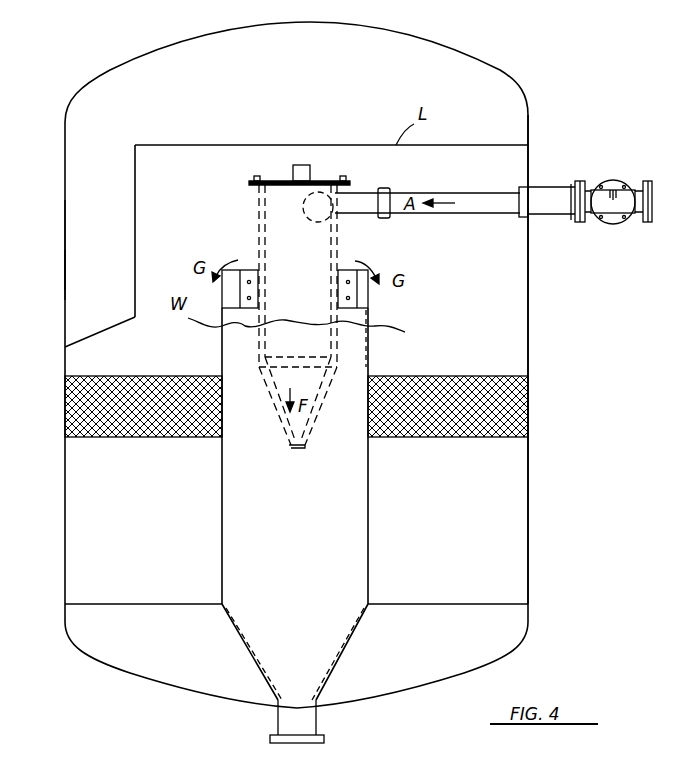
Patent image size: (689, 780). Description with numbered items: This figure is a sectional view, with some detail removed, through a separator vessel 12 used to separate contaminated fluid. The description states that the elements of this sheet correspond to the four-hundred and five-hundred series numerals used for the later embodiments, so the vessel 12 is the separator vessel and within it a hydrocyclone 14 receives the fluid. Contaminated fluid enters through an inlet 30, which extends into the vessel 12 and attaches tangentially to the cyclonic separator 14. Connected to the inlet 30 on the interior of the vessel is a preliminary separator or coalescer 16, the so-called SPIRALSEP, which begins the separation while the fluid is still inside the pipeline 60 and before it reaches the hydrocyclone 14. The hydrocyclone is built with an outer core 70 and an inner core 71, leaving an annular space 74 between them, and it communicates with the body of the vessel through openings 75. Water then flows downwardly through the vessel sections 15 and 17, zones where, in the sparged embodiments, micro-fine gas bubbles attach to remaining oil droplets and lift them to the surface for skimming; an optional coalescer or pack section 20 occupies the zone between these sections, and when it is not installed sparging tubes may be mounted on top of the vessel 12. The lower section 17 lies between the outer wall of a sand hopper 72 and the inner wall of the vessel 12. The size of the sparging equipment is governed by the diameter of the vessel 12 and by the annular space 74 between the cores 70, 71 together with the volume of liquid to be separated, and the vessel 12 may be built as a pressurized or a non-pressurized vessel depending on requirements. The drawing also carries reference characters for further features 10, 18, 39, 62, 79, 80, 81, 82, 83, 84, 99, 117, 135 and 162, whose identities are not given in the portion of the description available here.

The vessel 10 is at (512, 60).
The separator vessel 12 is at (530, 322).
The hydrocyclone 14 is at (208, 214).
The vessel section 15 is at (296, 384).
The preliminary separator or coalescer 16 is at (560, 164).
The vessel section 17 is at (314, 494).
The gas space 18 is at (96, 142).
The coalescer or pack section 20 is at (124, 372).
The inlet 30 is at (572, 223).
The bottom outlet 39 is at (325, 743).
The pipeline 60 is at (434, 192).
The valve 62 is at (622, 178).
The outer core 70 is at (340, 254).
The inner core 71 is at (266, 236).
The sand hopper 72 is at (380, 550).
The annular space 74 is at (256, 180).
The openings 75 is at (297, 450).
The vent fitting 79 is at (311, 173).
The baffle 80 is at (136, 242).
The inclined baffle portion 81 is at (86, 343).
The vessel wall 82 is at (65, 272).
The passage 83 is at (66, 242).
The horizontal partition 84 is at (137, 146).
The support bracket 99 is at (400, 338).
The floor plate 117 is at (95, 604).
The funnel 135 is at (343, 652).
The conical bottom 162 is at (277, 418).